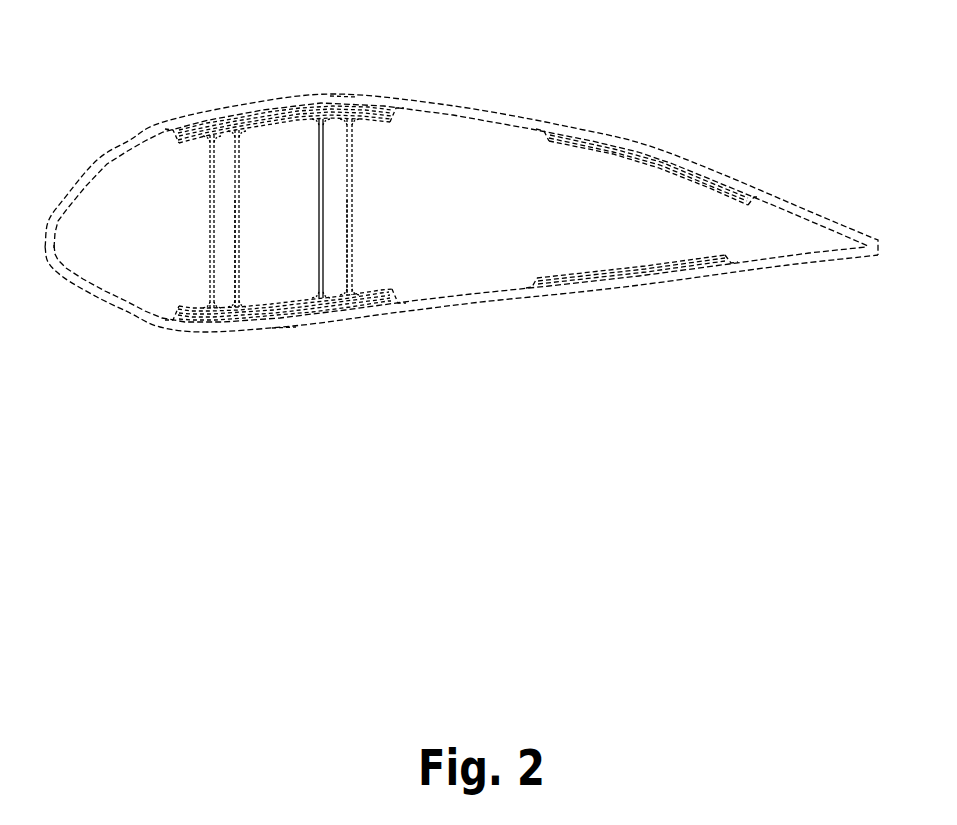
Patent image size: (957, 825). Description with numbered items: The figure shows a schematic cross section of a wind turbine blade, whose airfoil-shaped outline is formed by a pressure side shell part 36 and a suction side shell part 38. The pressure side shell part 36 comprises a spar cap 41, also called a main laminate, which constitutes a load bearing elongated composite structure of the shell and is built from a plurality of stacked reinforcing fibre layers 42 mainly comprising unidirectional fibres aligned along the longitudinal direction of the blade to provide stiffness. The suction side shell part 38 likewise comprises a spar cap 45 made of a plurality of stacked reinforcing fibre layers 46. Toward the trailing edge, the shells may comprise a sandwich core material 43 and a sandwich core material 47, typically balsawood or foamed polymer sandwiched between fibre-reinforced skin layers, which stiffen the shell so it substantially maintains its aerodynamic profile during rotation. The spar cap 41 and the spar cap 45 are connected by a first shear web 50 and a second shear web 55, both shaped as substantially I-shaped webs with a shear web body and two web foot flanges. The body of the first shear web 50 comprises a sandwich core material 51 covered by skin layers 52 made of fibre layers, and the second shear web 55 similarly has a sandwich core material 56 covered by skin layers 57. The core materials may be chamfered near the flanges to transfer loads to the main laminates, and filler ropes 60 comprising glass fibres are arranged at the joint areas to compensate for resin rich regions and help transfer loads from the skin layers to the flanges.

The pressure side shell part 36 is at (508, 304).
The suction side shell part 38 is at (494, 108).
The spar cap 41 is at (358, 333).
The stacked reinforcing fibre layers 42 is at (279, 333).
The sandwich core material 43 is at (640, 276).
The spar cap 45 is at (250, 97).
The stacked reinforcing fibre layers 46 is at (350, 105).
The sandwich core material 47 is at (640, 148).
The first shear web 50 is at (241, 207).
The sandwich core material 51 is at (241, 238).
The skin layers 52 is at (241, 170).
The second shear web 55 is at (354, 203).
The sandwich core material 56 is at (351, 234).
The skin layers 57 is at (352, 187).
The filler ropes 60 is at (220, 306).